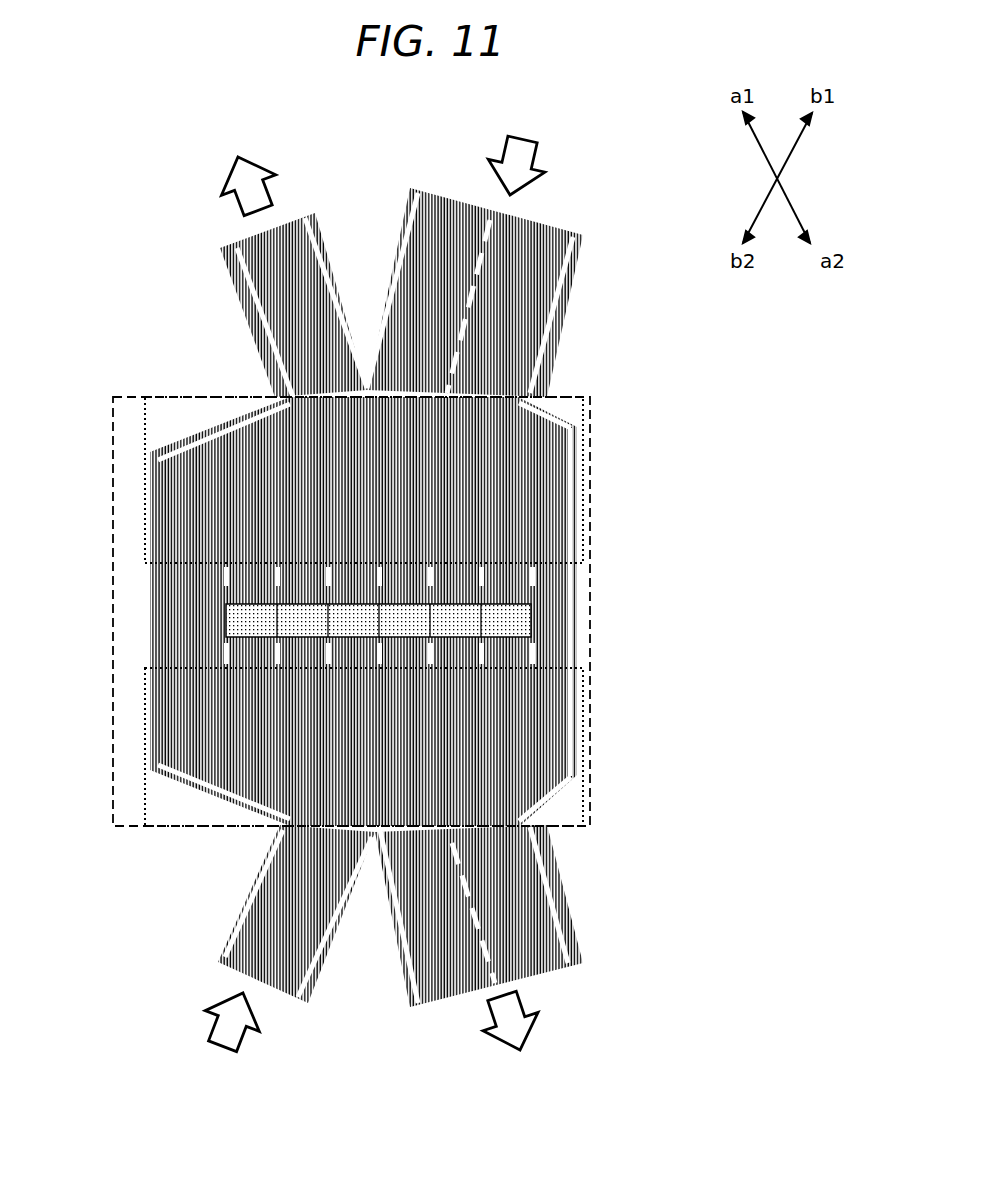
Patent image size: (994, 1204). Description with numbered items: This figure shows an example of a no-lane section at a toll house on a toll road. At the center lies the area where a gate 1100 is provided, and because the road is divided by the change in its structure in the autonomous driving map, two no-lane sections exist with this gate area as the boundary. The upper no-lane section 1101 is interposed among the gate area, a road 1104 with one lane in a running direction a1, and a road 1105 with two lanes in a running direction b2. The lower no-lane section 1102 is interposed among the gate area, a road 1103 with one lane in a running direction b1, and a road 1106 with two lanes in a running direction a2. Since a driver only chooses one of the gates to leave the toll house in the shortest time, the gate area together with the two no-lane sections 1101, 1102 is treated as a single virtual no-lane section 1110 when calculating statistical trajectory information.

The gate 1100 is at (483, 607).
The no-lane section 1101 is at (415, 480).
The no-lane section 1102 is at (415, 747).
The road 1103 is at (249, 914).
The road 1104 is at (239, 305).
The road 1105 is at (524, 292).
The road 1106 is at (528, 916).
The virtual no-lane section 1110 is at (308, 611).